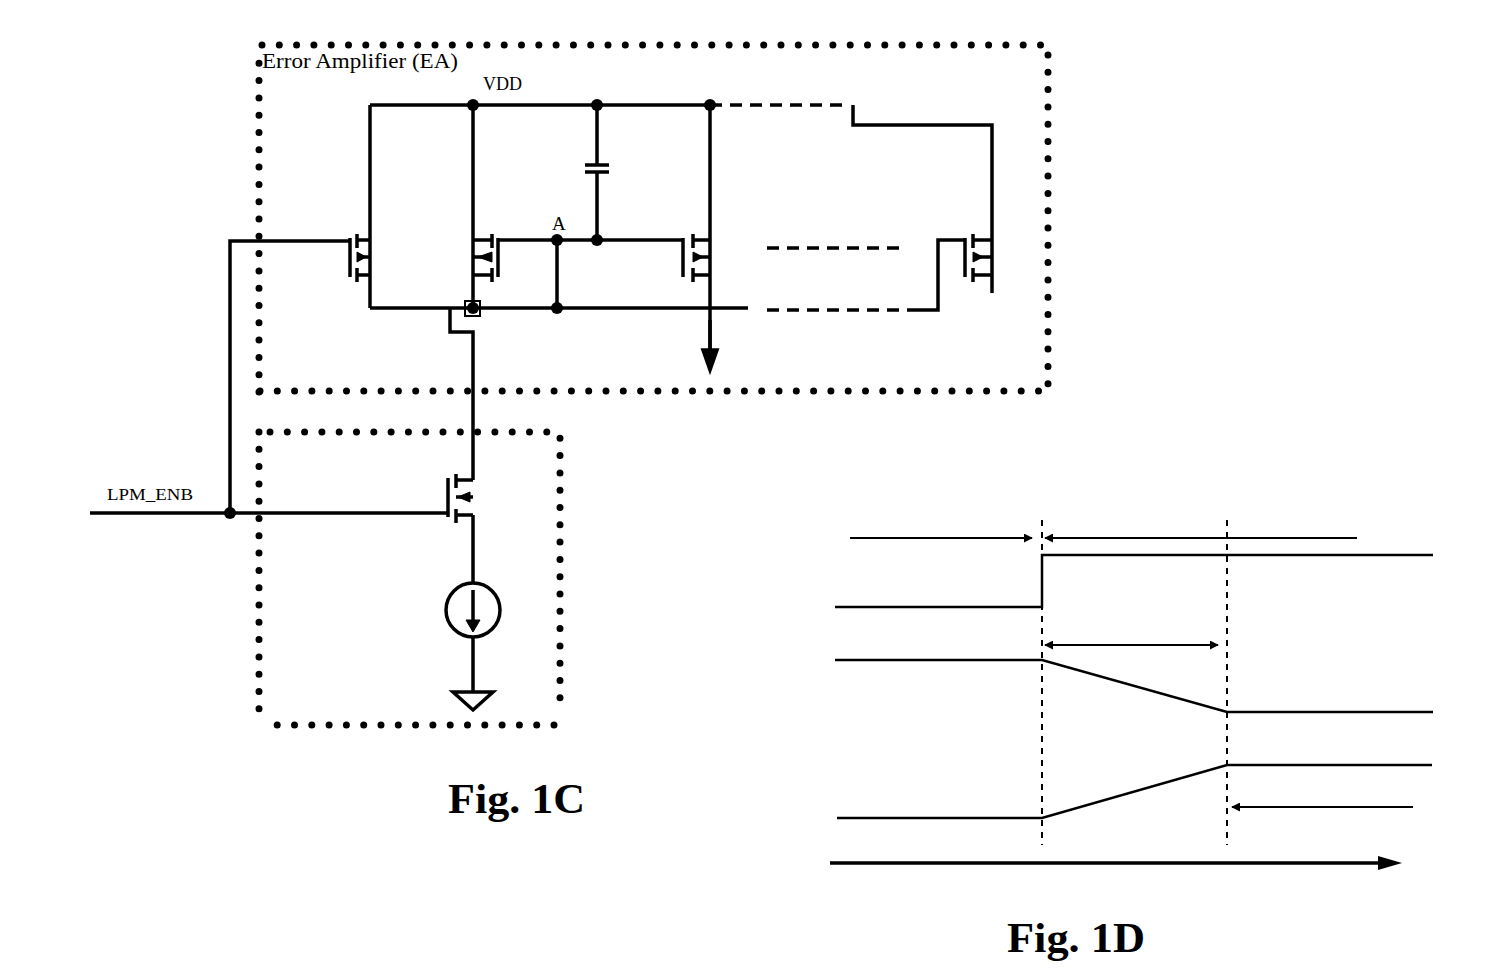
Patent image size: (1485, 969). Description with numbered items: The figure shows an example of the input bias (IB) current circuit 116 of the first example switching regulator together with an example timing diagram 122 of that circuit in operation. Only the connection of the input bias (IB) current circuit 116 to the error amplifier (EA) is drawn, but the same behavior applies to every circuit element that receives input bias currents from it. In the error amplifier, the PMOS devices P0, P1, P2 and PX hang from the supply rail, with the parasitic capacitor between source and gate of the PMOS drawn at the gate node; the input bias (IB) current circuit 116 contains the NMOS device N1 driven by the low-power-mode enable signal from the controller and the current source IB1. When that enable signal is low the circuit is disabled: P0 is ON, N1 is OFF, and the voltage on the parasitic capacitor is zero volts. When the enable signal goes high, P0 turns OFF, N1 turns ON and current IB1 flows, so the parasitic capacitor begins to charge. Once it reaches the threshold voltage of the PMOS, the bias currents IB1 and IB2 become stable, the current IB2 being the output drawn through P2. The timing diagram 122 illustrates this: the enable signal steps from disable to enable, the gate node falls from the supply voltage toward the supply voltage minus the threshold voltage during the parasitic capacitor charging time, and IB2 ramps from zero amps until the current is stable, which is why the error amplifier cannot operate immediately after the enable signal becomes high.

In FIG. 1C, the input bias (IB) current circuit 116 is at (409, 579).
In FIG. 1D, the timing diagram 122 is at (1212, 455).
In FIG. 1C, the element P0 is at (375, 258).
In FIG. 1C, the element P1 is at (470, 258).
In FIG. 1C, the element P2 is at (711, 237).
In FIG. 1C, the element PX is at (994, 258).
In FIG. 1C, the element N1 is at (477, 497).
In FIG. 1C, the current IB1 is at (489, 610).
In FIG. 1C, the bias current IB2 is at (728, 335).